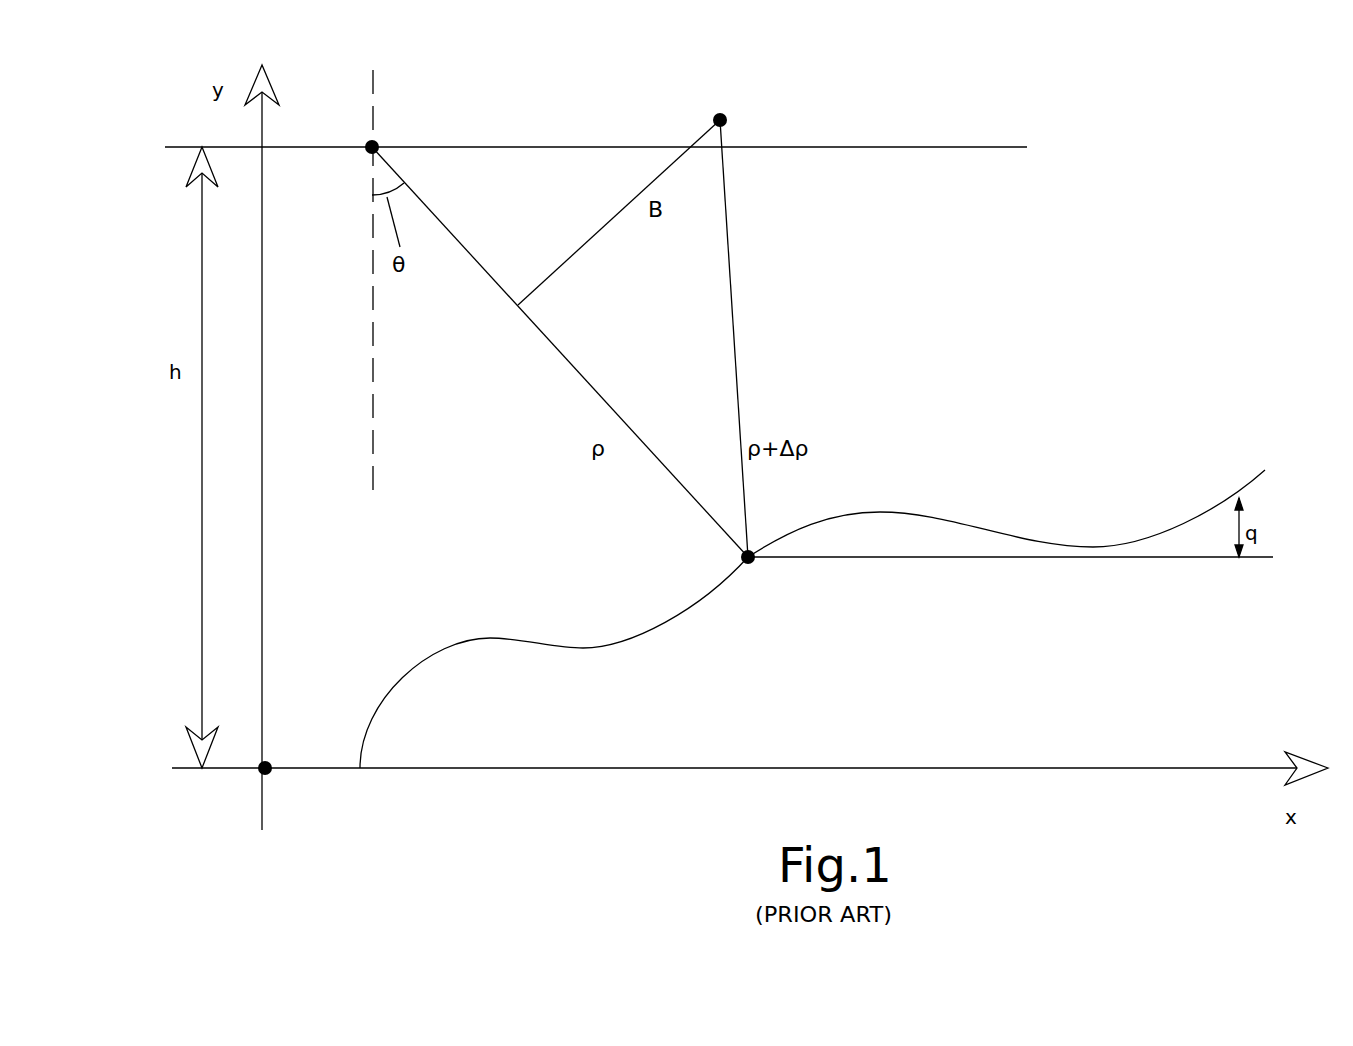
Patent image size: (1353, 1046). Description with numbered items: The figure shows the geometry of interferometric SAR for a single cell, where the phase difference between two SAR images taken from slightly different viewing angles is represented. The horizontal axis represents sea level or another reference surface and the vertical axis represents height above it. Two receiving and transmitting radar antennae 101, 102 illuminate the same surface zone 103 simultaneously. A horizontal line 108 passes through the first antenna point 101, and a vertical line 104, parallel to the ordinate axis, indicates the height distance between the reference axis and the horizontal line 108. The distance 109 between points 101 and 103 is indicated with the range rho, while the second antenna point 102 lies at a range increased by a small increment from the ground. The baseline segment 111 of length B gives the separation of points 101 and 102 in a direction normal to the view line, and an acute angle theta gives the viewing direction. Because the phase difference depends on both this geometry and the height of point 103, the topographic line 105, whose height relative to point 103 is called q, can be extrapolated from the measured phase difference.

The first radar antenna point 101 is at (370, 140).
The second radar antenna point 102 is at (722, 114).
The surface zone point 103 is at (746, 566).
The vertical line 104 is at (202, 440).
The topographic line 105 is at (1187, 525).
The horizontal line 108 is at (972, 147).
The distance ρ 109 is at (567, 362).
The baseline segment 111 is at (613, 218).